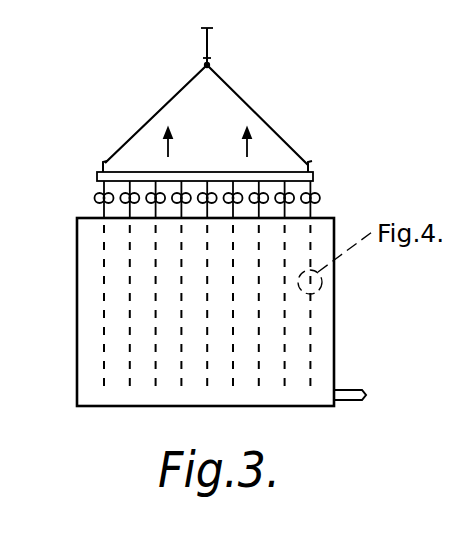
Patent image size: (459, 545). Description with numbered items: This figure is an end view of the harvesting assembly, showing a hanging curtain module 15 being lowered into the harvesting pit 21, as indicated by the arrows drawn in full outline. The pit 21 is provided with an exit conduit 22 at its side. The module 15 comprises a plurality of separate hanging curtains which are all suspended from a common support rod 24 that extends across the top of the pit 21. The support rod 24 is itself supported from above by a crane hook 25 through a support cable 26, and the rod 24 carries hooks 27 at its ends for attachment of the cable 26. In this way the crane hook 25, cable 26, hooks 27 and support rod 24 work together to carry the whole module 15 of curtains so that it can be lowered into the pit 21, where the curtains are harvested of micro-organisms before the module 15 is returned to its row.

The hanging curtain module 15 is at (92, 200).
The pit 21 is at (95, 406).
The exit conduit 22 is at (355, 402).
The common support rod 24 is at (258, 172).
The crane hook 25 is at (210, 45).
The support cable 26 is at (252, 108).
The hooks 27 is at (313, 163).